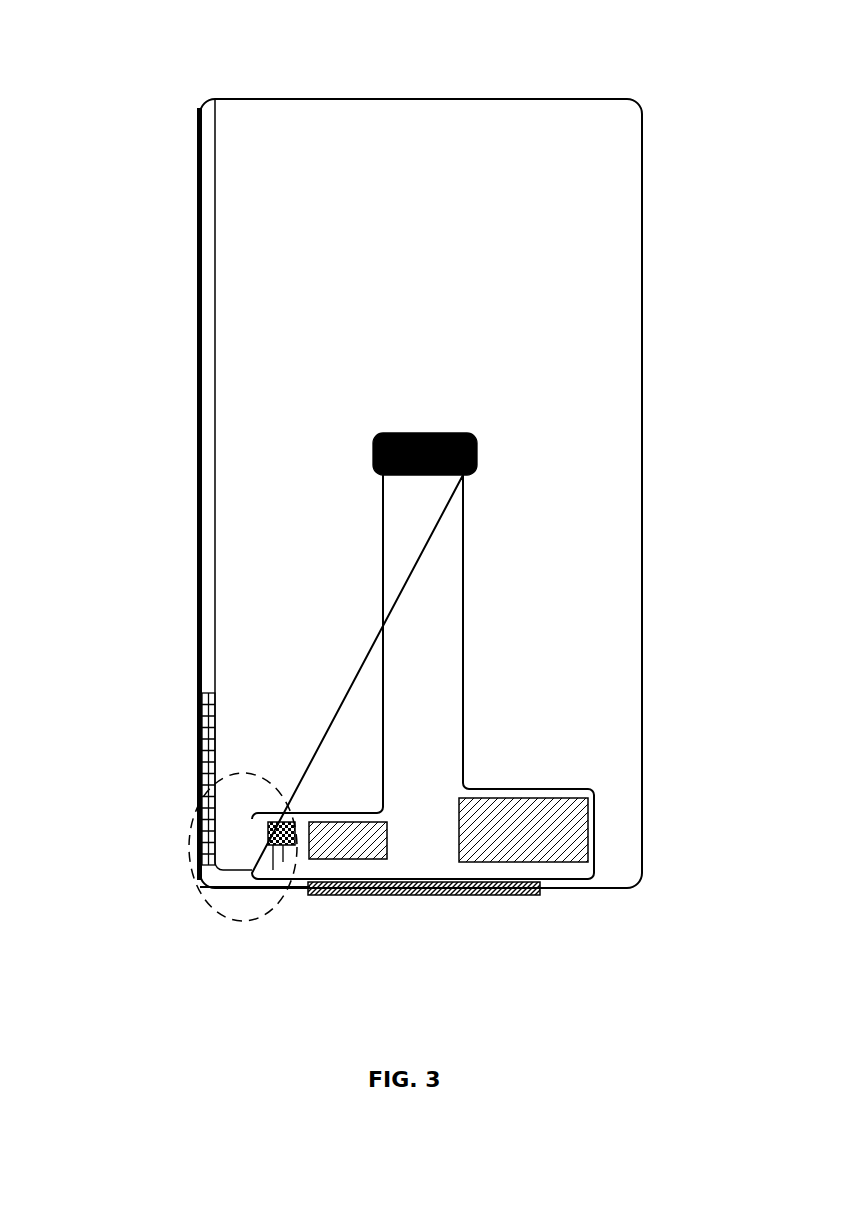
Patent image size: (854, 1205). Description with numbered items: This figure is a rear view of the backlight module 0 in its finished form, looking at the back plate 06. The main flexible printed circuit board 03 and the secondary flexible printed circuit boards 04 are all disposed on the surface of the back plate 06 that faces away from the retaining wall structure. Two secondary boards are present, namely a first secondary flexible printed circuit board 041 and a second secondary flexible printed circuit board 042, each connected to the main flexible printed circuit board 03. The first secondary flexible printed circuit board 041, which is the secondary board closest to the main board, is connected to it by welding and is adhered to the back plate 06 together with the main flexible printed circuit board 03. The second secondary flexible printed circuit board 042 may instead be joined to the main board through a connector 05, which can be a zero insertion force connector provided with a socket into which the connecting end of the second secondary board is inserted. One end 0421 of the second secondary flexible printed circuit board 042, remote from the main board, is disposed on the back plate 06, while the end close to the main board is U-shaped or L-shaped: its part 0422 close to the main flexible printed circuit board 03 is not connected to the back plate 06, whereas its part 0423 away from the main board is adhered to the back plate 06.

The backlight module 0 is at (440, 42).
The back plate 06 is at (590, 293).
The main flexible printed circuit board 03 is at (439, 654).
The secondary flexible printed circuit boards 04 is at (301, 575).
The first secondary flexible printed circuit board 041 is at (465, 874).
The second secondary flexible printed circuit board 042 is at (186, 529).
The end of the second secondary flexible printed circuit board away from the main fl 0421 is at (205, 508).
The part close to the main flexible printed circuit board 0422 is at (198, 889).
The part away from the main flexible printed circuit board 0423 is at (205, 760).
The connector 05 is at (285, 840).